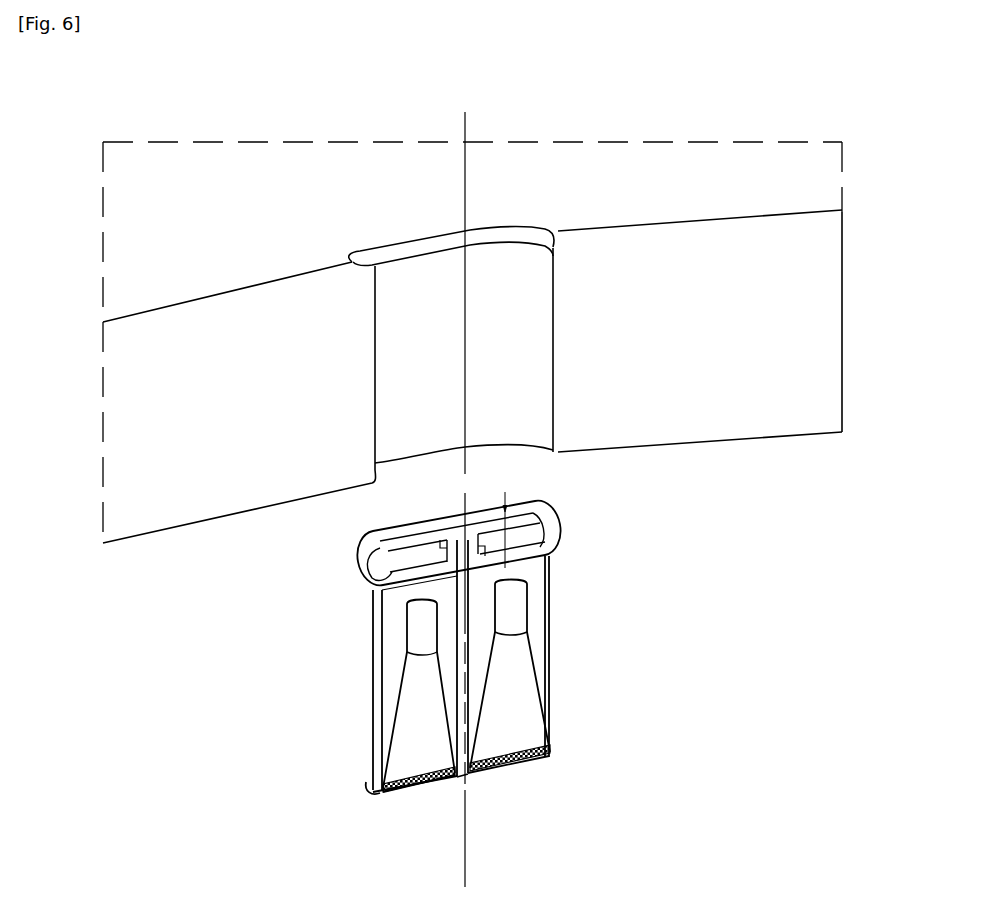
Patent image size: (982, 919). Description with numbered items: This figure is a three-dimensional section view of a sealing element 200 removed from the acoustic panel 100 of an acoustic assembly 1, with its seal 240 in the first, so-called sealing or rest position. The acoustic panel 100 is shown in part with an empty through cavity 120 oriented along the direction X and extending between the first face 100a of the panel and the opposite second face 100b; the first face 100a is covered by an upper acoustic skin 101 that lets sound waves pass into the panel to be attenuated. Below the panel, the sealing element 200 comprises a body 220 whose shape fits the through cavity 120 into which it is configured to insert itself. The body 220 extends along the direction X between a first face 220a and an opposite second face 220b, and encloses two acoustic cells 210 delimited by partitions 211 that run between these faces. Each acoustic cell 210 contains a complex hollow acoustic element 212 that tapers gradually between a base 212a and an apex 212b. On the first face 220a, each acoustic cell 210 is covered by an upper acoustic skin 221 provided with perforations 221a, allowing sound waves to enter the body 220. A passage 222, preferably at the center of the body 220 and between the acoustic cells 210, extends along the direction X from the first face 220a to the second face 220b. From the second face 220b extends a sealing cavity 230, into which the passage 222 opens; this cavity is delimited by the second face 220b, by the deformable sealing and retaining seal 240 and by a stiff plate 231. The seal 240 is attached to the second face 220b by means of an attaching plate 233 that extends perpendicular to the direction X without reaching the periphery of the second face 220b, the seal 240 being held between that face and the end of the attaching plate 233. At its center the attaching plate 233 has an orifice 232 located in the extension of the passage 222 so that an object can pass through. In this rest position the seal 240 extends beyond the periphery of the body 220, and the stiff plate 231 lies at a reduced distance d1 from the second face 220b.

The acoustic assembly 1 is at (492, 476).
The acoustic panel 100 is at (492, 357).
The first face of the acoustic panel 100a is at (800, 437).
The second face of the acoustic panel 100b is at (800, 172).
The upper acoustic skin 101 is at (142, 540).
The through cavity 120 is at (518, 270).
The sealing element 200 is at (545, 661).
The acoustic cell 210 is at (366, 694).
The partition 211 is at (460, 688).
The hollow acoustic element 212 is at (560, 674).
The base 212a is at (533, 742).
The apex 212b is at (513, 603).
The body 220 is at (498, 697).
The first face of the body 220a is at (518, 768).
The second face of the body 220b is at (549, 570).
The upper acoustic skin 221 is at (397, 795).
The perforations 221a is at (432, 788).
The passage 222 is at (487, 770).
The sealing cavity 230 is at (455, 546).
The stiff plate 231 is at (378, 524).
The orifice 232 is at (513, 505).
The attaching plate 233 is at (383, 564).
The deformable seal 240 is at (562, 533).
The reduced distance d1 is at (497, 530).
The direction X is at (475, 506).